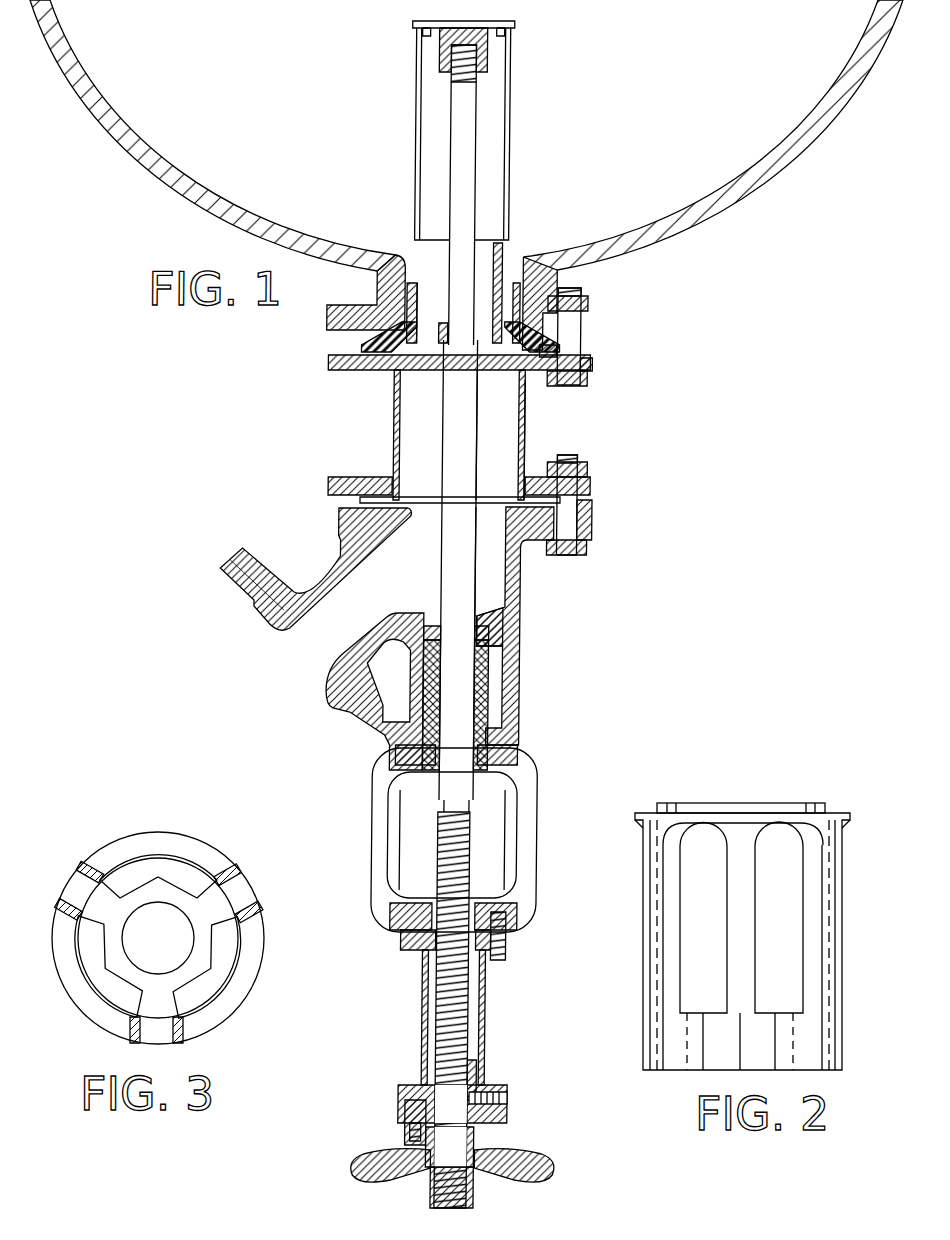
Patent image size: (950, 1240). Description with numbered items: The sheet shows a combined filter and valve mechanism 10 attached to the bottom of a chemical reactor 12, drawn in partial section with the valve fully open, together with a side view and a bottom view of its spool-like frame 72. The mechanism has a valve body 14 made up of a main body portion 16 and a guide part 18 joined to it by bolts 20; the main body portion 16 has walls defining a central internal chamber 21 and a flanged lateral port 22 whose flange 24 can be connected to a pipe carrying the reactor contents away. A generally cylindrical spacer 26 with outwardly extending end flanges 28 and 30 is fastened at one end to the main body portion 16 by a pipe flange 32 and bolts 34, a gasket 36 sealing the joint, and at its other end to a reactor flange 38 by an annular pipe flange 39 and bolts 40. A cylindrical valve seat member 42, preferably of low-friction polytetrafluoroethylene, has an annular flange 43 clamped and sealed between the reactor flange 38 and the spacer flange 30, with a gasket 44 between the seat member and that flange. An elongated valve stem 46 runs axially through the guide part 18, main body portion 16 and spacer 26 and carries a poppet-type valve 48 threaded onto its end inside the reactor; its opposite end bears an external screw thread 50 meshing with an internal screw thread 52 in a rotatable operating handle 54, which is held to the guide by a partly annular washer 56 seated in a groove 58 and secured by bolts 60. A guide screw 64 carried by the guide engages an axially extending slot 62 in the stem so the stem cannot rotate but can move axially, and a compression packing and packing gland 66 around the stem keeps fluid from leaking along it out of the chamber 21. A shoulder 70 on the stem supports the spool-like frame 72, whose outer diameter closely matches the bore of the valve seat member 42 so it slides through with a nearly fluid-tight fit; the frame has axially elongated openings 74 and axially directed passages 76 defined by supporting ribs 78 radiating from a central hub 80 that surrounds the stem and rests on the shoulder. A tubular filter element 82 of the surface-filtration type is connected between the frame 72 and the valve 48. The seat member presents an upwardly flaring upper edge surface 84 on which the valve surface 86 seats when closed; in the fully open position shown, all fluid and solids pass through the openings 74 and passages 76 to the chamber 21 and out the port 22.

In FIG. 1, the combined filter and valve mechanism 10 is at (636, 473).
In FIG. 1, the chemical reactor 12 is at (684, 252).
In FIG. 1, the valve body 14 is at (515, 626).
In FIG. 1, the main body portion 16 is at (509, 586).
In FIG. 1, the guide part 18 is at (497, 990).
In FIG. 1, the bolts 20 is at (512, 948).
In FIG. 1, the central internal chamber 21 is at (488, 575).
In FIG. 1, the flanged lateral port 22 is at (344, 650).
In FIG. 1, the flange 24 is at (242, 562).
In FIG. 1, the spacer 26 is at (530, 438).
In FIG. 1, the end flange 28 is at (374, 482).
In FIG. 1, the end flange 30 is at (362, 358).
In FIG. 1, the pipe flange 32 is at (583, 470).
In FIG. 1, the bolts 34 is at (580, 556).
In FIG. 1, the gasket 36 is at (500, 498).
In FIG. 1, the reactor flange 38 is at (592, 304).
In FIG. 1, the annular pipe flange 39 is at (597, 366).
In FIG. 1, the bolts 40 is at (582, 384).
In FIG. 1, the valve seat member 42 is at (405, 304).
In FIG. 1, the annular flange 43 is at (372, 340).
In FIG. 1, the gasket 44 is at (562, 353).
In FIG. 1, the valve stem 46 is at (468, 205).
In FIG. 1, the poppet-type valve 48 is at (503, 21).
In FIG. 1, the external screw thread 50 is at (462, 1035).
In FIG. 1, the internal screw thread 52 is at (476, 1150).
In FIG. 1, the operating handle 54 is at (556, 1166).
In FIG. 1, the partly annular washer 56 is at (404, 1102).
In FIG. 1, the groove 58 is at (438, 1168).
In FIG. 1, the bolts 60 is at (414, 1136).
In FIG. 1, the axially extending slot 62 is at (484, 1072).
In FIG. 1, the guide screw 64 is at (520, 1098).
In FIG. 1, the compression packing and packing gland 66 is at (498, 716).
In FIG. 1, the shoulder 70 is at (456, 347).
In FIG. 1, the spool-like frame 72 is at (506, 262).
In FIG. 3, the spool-like frame 72 is at (256, 954).
In FIG. 2, the spool-like frame 72 is at (840, 898).
In FIG. 2, the axially elongated openings 74 is at (724, 880).
In FIG. 1, the axially directed passages 76 is at (428, 326).
In FIG. 3, the axially directed passages 76 is at (185, 870).
In FIG. 2, the axially directed passages 76 is at (684, 1042).
In FIG. 3, the supporting ribs 78 is at (240, 882).
In FIG. 3, the central hub 80 is at (200, 942).
In FIG. 1, the tubular filter element 82 is at (512, 156).
In FIG. 1, the upper edge surface 84 is at (406, 270).
In FIG. 1, the valve surface 86 is at (422, 31).